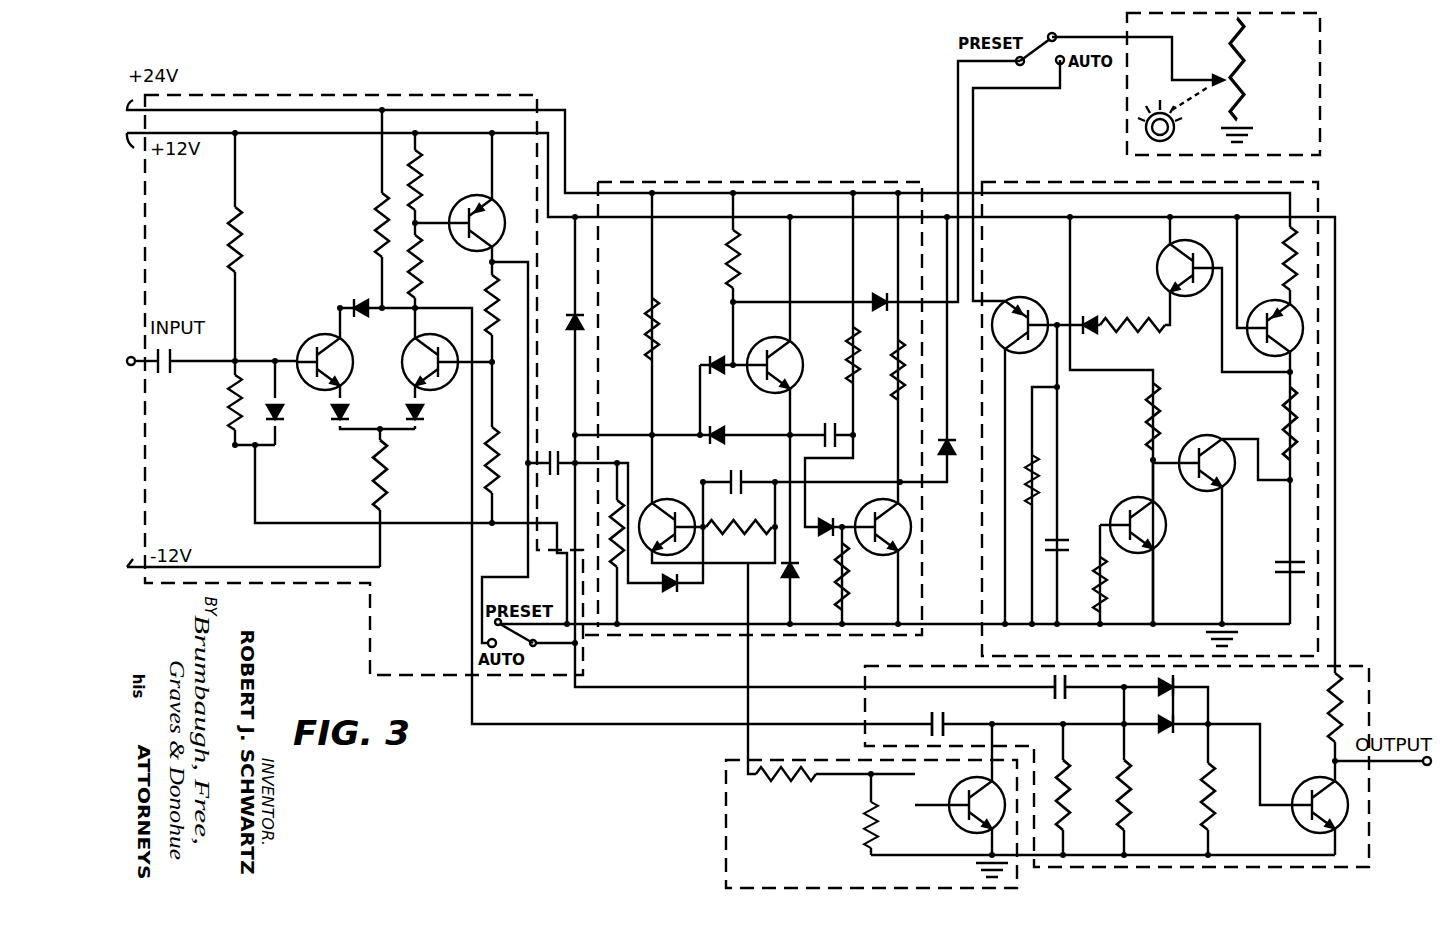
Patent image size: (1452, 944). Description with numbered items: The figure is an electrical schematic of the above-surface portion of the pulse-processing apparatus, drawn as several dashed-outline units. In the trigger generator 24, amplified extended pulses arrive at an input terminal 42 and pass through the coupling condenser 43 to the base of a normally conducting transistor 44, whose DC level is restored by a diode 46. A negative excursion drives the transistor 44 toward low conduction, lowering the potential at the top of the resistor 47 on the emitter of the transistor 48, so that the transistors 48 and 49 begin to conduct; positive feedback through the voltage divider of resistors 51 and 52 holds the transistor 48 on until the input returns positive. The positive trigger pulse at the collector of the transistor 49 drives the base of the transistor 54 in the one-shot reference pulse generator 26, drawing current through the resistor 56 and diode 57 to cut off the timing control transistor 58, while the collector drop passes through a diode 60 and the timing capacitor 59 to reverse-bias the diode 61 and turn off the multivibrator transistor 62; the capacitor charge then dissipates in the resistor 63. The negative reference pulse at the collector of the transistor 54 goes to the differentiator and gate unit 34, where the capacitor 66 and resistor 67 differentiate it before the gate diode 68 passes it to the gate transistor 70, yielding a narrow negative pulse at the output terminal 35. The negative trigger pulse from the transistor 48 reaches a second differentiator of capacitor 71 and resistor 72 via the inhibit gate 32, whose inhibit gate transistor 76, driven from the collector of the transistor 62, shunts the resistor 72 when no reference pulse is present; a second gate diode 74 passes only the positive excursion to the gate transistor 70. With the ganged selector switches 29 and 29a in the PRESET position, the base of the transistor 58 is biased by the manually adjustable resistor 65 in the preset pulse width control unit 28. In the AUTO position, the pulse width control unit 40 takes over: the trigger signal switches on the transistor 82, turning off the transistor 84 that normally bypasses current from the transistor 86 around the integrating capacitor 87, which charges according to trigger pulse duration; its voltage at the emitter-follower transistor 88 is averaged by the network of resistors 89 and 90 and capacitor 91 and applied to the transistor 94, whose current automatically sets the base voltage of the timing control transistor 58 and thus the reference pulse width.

The trigger generator 24 is at (490, 97).
The reference pulse generator 26 is at (916, 180).
The preset pulse width control unit 28 is at (1038, 21).
The selector switch 29 is at (1037, 55).
The selector switch 29a is at (540, 662).
The inhibit gate 32 is at (716, 832).
The differentiator and gate unit 34 is at (1393, 888).
The output terminal 35 is at (1422, 766).
The pulse width control unit 40 is at (1252, 168).
The input terminal 42 is at (134, 356).
The coupling condenser 43 is at (176, 370).
The transistor 44 is at (312, 338).
The diode 46 is at (281, 414).
The resistor 47 is at (379, 490).
The transistor 48 is at (424, 412).
The transistor 49 is at (468, 198).
The resistor 51 is at (486, 290).
The resistor 52 is at (500, 428).
The transistor 54 is at (678, 500).
The resistor 56 is at (740, 270).
The diode 57 is at (720, 355).
The timing control transistor 58 is at (797, 348).
The timing capacitor 59 is at (830, 426).
The diode 60 is at (722, 428).
The diode 61 is at (822, 520).
The multivibrator transistor 62 is at (850, 560).
The resistor 63 is at (857, 378).
The manually adjustable resistor 65 is at (1245, 97).
The capacitor 66 is at (1054, 692).
The resistor 67 is at (1133, 806).
The gate diode 68 is at (1176, 676).
The gate transistor 70 is at (1313, 781).
The differentiating capacitor 71 is at (946, 716).
The resistor 72 is at (1080, 800).
The second gate diode 74 is at (1174, 734).
The inhibit gate transistor 76 is at (950, 827).
The transistor 82 is at (1128, 498).
The transistor 84 is at (1205, 436).
The transistor 86 is at (1270, 306).
The integrating capacitor 87 is at (1283, 562).
The emitter-follower transistor 88 is at (1163, 253).
The resistor 89 is at (1133, 316).
The resistor 90 is at (1030, 445).
The capacitor 91 is at (1064, 540).
The transistor 94 is at (1034, 306).